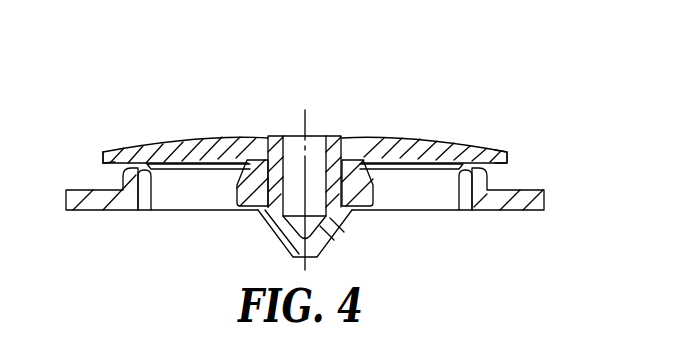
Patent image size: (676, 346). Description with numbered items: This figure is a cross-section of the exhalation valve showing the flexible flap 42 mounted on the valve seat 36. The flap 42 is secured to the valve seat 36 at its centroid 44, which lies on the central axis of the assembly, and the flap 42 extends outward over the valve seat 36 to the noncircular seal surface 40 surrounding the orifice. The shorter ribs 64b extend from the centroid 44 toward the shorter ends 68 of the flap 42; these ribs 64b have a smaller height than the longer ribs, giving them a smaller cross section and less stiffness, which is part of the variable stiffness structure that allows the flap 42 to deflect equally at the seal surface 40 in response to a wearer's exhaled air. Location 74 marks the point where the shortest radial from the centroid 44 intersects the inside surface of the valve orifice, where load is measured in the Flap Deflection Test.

The valve seat 36 is at (127, 190).
The location 1 74 is at (152, 171).
The centroid 44 is at (302, 123).
The flexible flap 42 is at (297, 119).
The shorter ribs 64b is at (391, 148).
The shorter ends 68 is at (114, 159).
The seal surface 40 is at (478, 158).